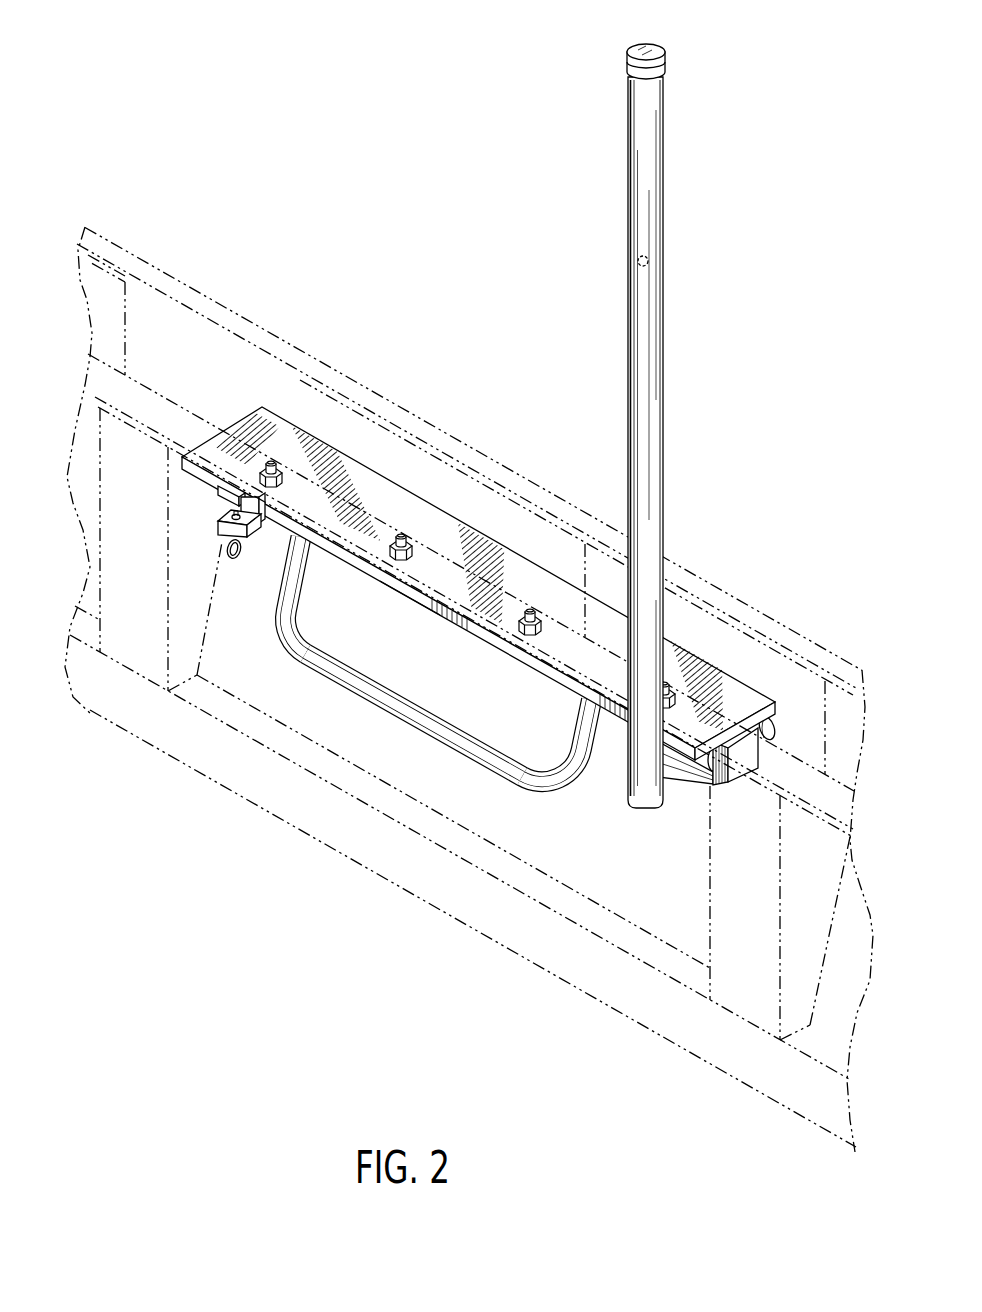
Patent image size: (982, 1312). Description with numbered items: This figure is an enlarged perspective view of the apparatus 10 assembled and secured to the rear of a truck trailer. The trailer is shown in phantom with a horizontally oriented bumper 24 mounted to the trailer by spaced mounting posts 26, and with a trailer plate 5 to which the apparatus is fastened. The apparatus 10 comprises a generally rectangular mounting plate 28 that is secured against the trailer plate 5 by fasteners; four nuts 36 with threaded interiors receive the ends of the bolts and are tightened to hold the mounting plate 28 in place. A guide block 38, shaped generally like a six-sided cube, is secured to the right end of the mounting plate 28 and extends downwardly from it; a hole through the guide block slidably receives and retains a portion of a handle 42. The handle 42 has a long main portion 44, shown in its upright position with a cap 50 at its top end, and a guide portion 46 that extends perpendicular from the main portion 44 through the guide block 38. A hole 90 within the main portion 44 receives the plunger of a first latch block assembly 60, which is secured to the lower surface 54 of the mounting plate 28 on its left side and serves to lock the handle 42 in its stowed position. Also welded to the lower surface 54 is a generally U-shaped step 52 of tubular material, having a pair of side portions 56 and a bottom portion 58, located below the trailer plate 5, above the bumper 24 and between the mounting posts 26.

The plate 5 is at (144, 400).
The apparatus 10 is at (673, 313).
The bumper 24 is at (247, 805).
The mounting posts 26 is at (167, 628).
The mounting plate 28 is at (260, 407).
The nuts 36 is at (282, 466).
The guide block 38 is at (733, 785).
The handle 42 is at (627, 330).
The main portion 44 is at (627, 167).
The guide portion 46 is at (679, 790).
The cap 50 is at (638, 45).
The U-shaped step 52 is at (284, 648).
The lower surface 54 is at (405, 592).
The side portions 56 is at (309, 575).
The bottom portion 58 is at (437, 712).
The first latch block assembly 60 is at (257, 530).
The hole 90 is at (640, 258).